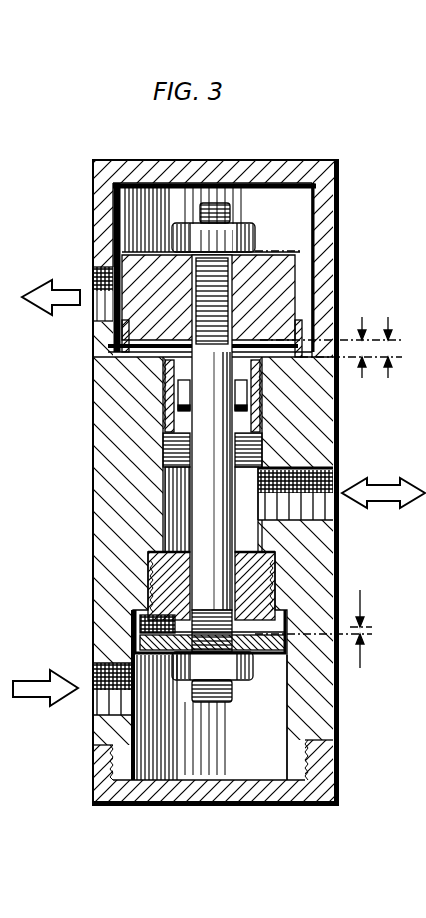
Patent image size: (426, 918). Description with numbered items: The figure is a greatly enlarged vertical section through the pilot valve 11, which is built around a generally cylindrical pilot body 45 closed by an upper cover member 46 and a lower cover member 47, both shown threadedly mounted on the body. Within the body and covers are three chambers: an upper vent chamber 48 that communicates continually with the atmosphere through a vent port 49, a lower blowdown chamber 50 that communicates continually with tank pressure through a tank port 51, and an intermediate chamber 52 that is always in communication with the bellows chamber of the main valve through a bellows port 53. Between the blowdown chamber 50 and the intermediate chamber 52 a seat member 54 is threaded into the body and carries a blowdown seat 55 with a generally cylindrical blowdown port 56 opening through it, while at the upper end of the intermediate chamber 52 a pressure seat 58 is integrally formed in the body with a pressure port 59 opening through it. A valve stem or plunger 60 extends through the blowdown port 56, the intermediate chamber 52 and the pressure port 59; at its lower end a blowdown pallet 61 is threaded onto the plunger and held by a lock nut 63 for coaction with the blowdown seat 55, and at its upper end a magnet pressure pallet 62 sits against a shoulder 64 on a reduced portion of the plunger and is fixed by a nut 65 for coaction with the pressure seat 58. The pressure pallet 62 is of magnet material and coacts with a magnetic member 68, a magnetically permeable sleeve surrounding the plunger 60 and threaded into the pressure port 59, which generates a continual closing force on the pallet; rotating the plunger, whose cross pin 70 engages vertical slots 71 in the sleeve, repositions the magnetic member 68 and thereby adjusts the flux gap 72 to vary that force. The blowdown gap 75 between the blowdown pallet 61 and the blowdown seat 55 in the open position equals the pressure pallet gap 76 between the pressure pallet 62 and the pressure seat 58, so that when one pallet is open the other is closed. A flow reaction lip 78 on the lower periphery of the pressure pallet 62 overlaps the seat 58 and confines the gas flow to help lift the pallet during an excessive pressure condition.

The pilot valve 11 is at (312, 156).
The pilot body 45 is at (320, 552).
The upper cover member 46 is at (322, 218).
The lower cover member 47 is at (325, 772).
The upper vent chamber 48 is at (336, 164).
The vent port 49 is at (95, 285).
The lower blowdown chamber 50 is at (242, 765).
The tank port 51 is at (105, 700).
The intermediate chamber 52 is at (155, 497).
The bellows port 53 is at (342, 492).
The seat member 54 is at (280, 575).
The blowdown seat 55 is at (286, 612).
The blowdown port 56 is at (265, 598).
The pressure seat 58 is at (272, 348).
The pressure port 59 is at (183, 368).
The valve stem or plunger 60 is at (322, 400).
The blowdown pallet 61 is at (297, 668).
The magnet pressure pallet 62 is at (298, 268).
The lock nut 63 is at (246, 682).
The shoulder 64 is at (214, 345).
The nut 65 is at (247, 262).
The magnetic member 68 is at (160, 375).
The cross pin 70 is at (185, 430).
The vertical slots 71 is at (175, 400).
The flux gap 72 is at (388, 318).
The blowdown gap 75 is at (365, 655).
The pressure pallet gap 76 is at (362, 318).
The flow reaction lip 78 is at (118, 336).